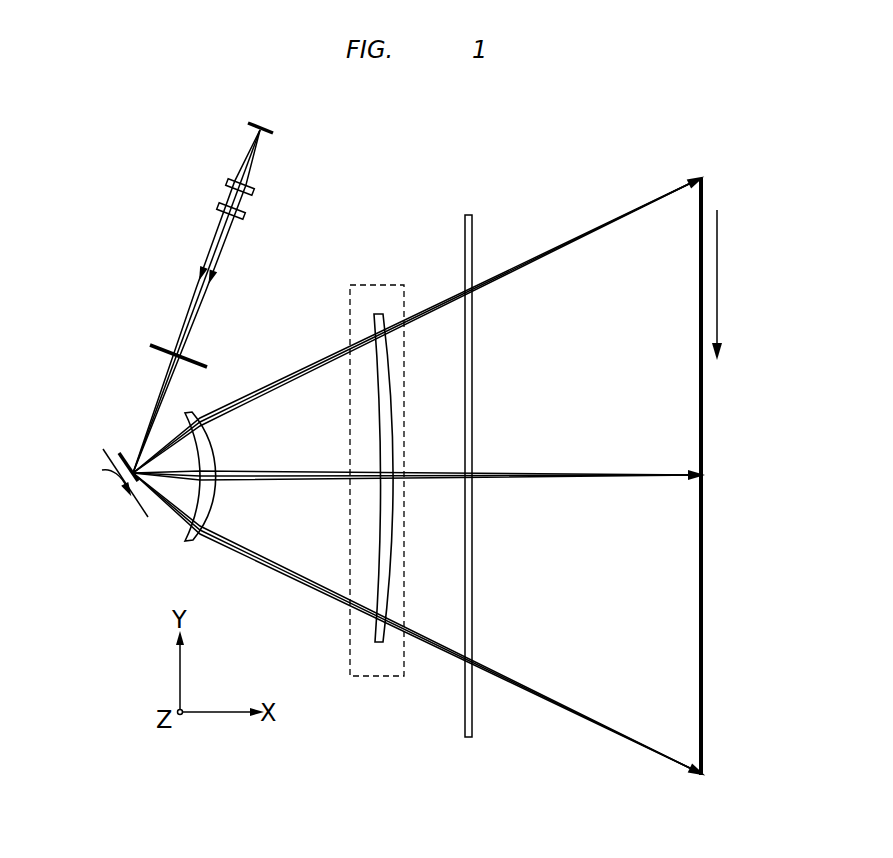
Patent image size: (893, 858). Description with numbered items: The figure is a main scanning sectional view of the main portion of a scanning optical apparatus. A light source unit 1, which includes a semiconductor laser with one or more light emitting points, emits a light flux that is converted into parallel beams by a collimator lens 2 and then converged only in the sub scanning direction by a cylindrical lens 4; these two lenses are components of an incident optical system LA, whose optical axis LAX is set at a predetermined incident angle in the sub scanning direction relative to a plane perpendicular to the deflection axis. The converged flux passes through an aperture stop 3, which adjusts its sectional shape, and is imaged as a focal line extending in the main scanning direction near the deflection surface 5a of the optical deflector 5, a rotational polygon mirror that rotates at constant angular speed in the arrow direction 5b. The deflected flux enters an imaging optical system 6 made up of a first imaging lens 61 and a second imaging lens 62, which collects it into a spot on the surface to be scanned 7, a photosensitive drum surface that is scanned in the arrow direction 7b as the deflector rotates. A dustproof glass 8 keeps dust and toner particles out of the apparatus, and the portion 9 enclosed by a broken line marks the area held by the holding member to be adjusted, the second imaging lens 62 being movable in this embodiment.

The light source unit 1 is at (272, 124).
The collimator lens 2 is at (230, 181).
The aperture stop 3 is at (155, 346).
The cylindrical lens 4 is at (219, 207).
The optical deflector 5 is at (136, 508).
The deflection surface 5a is at (130, 462).
The arrow direction 5b is at (103, 495).
The imaging optical system 6 is at (289, 421).
The first imaging lens 61 is at (188, 412).
The second imaging lens 62 is at (380, 313).
The surface to be scanned 7 is at (700, 288).
The arrow direction 7b is at (718, 270).
The dustproof glass 8 is at (471, 228).
The portion enclosed by a broken line 9 is at (388, 285).
The incident optical system LA is at (192, 98).
The optical axis LAX is at (217, 251).